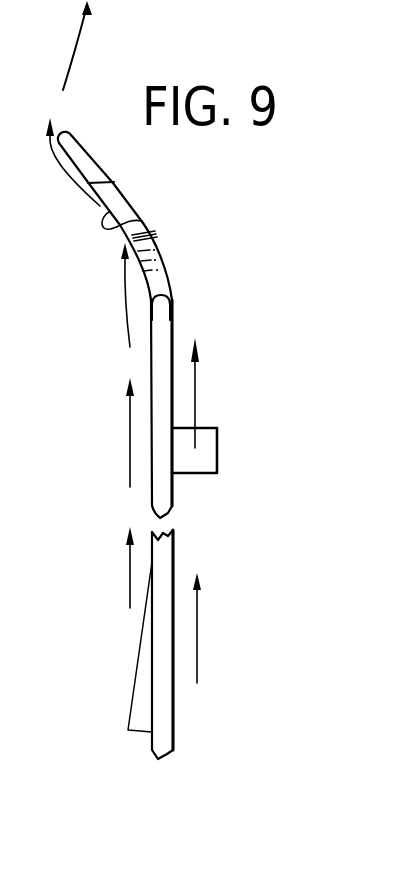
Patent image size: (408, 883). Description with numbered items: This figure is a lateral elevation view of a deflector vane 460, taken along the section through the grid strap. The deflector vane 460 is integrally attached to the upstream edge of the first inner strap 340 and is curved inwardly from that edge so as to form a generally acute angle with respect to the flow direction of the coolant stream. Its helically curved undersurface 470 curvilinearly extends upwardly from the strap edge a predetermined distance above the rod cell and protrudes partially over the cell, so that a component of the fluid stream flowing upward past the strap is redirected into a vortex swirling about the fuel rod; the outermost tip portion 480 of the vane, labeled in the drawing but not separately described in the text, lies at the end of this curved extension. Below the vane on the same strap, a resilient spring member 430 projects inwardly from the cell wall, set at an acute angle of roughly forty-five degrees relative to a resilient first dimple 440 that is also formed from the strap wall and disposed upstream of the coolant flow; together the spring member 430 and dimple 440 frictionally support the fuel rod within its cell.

The distal tip 480 is at (115, 175).
The helically curved undersurface 470 is at (147, 216).
The deflector vane 460 is at (173, 310).
The first inner strap 340 is at (150, 434).
The first dimple 440 is at (205, 445).
The spring member 430 is at (145, 667).